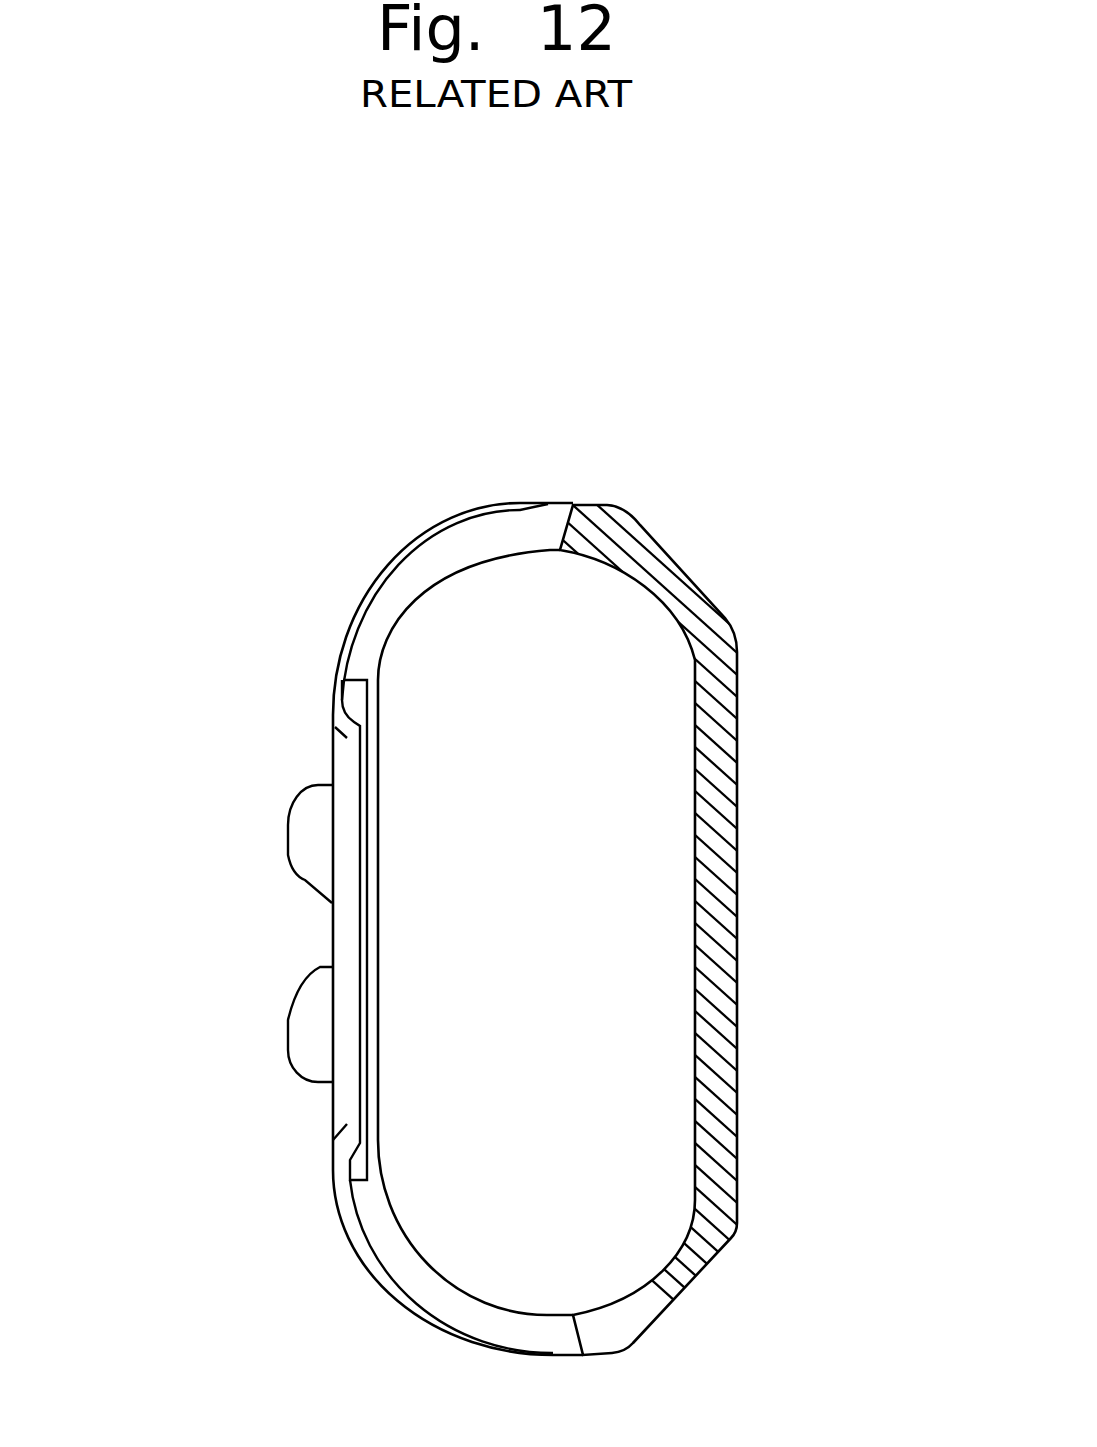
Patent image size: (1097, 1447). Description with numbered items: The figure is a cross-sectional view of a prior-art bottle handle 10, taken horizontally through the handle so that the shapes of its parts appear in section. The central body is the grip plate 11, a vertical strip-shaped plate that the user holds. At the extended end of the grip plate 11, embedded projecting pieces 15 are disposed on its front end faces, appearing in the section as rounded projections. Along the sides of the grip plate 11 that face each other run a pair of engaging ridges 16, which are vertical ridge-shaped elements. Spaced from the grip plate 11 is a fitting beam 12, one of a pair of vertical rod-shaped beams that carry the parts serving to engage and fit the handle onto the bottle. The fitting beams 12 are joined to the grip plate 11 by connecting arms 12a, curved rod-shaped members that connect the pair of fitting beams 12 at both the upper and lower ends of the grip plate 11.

The case assembly (related art) 10 is at (714, 570).
The grip plate 11 is at (738, 895).
The fitting beam 12 is at (387, 938).
The connecting arm 12a is at (400, 605).
The embedded projecting piece 15 is at (317, 867).
The engaging ridge 16 is at (353, 920).